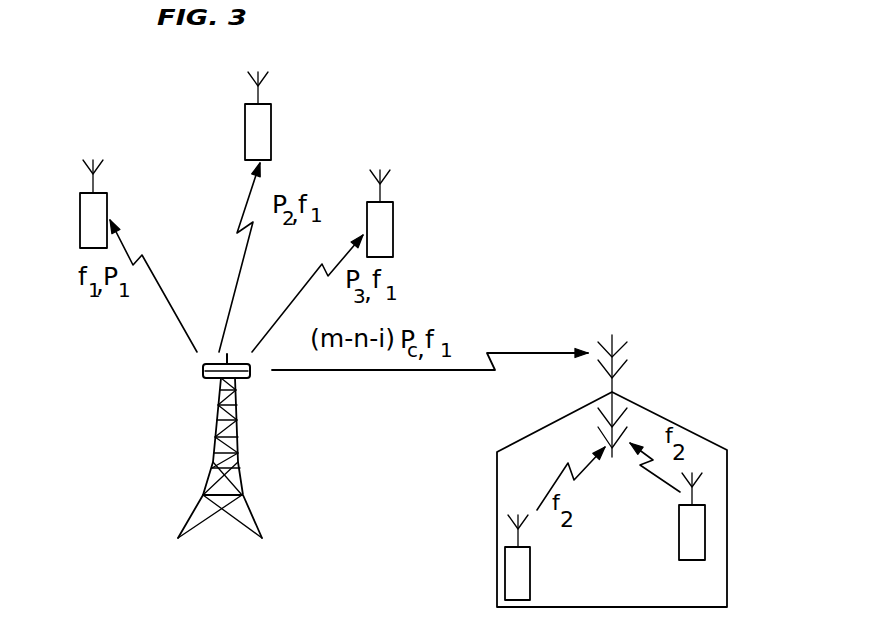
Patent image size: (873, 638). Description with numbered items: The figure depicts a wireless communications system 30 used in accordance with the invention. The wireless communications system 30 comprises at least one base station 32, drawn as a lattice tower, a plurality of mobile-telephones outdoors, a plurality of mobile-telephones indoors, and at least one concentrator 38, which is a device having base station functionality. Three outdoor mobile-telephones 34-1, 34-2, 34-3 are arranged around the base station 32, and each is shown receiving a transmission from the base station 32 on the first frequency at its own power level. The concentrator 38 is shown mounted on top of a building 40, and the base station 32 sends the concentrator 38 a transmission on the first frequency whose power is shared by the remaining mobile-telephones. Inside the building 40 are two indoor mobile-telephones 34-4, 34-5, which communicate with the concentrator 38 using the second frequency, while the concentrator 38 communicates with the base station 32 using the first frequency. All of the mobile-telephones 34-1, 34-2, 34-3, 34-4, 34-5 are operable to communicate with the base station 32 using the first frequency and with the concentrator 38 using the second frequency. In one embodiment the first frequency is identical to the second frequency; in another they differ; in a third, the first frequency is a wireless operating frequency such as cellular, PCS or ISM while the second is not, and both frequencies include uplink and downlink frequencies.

The wireless communications system 30 is at (210, 81).
The base station 32 is at (210, 468).
The mobile-telephone 34-1 is at (107, 208).
The mobile-telephone 34-2 is at (271, 128).
The mobile-telephone 34-3 is at (393, 232).
The mobile-telephone 34-4 is at (530, 575).
The mobile-telephone 34-5 is at (705, 537).
The concentrator 38 is at (622, 348).
The building 40 is at (707, 438).